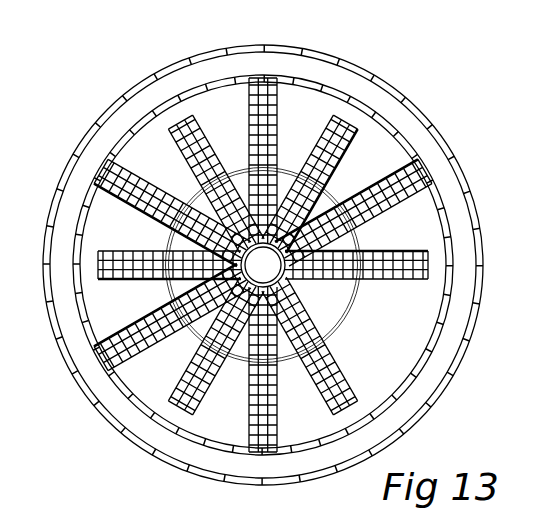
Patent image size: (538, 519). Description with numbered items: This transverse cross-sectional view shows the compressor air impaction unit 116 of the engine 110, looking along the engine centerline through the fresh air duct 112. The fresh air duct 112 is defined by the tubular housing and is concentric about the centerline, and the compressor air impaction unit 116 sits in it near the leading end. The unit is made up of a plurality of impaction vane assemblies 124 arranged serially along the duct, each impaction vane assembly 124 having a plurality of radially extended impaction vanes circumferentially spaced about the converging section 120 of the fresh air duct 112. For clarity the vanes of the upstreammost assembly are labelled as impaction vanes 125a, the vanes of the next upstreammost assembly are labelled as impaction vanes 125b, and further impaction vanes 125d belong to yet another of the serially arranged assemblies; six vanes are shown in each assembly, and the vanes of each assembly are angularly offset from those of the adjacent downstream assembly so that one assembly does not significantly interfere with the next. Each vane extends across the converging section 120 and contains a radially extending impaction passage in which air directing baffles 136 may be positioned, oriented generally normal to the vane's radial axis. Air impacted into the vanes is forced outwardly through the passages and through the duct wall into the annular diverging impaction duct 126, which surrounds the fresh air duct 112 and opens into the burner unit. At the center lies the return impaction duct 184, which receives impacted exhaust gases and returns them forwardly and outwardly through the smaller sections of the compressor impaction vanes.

The engine 110 is at (377, 31).
The fresh air duct 112 is at (103, 314).
The compressor air impaction unit 116 is at (361, 125).
The converging section 120 is at (85, 290).
The impaction vane assembly 124 is at (101, 192).
The impaction vanes of the upstreammost assembly 125a is at (162, 168).
The impaction vanes of the next upstreammost assembly 125b is at (135, 258).
The spoke 125d is at (386, 176).
The impaction duct 126 is at (44, 265).
The air directing baffles 136 is at (160, 276).
The return impaction duct 184 is at (263, 265).